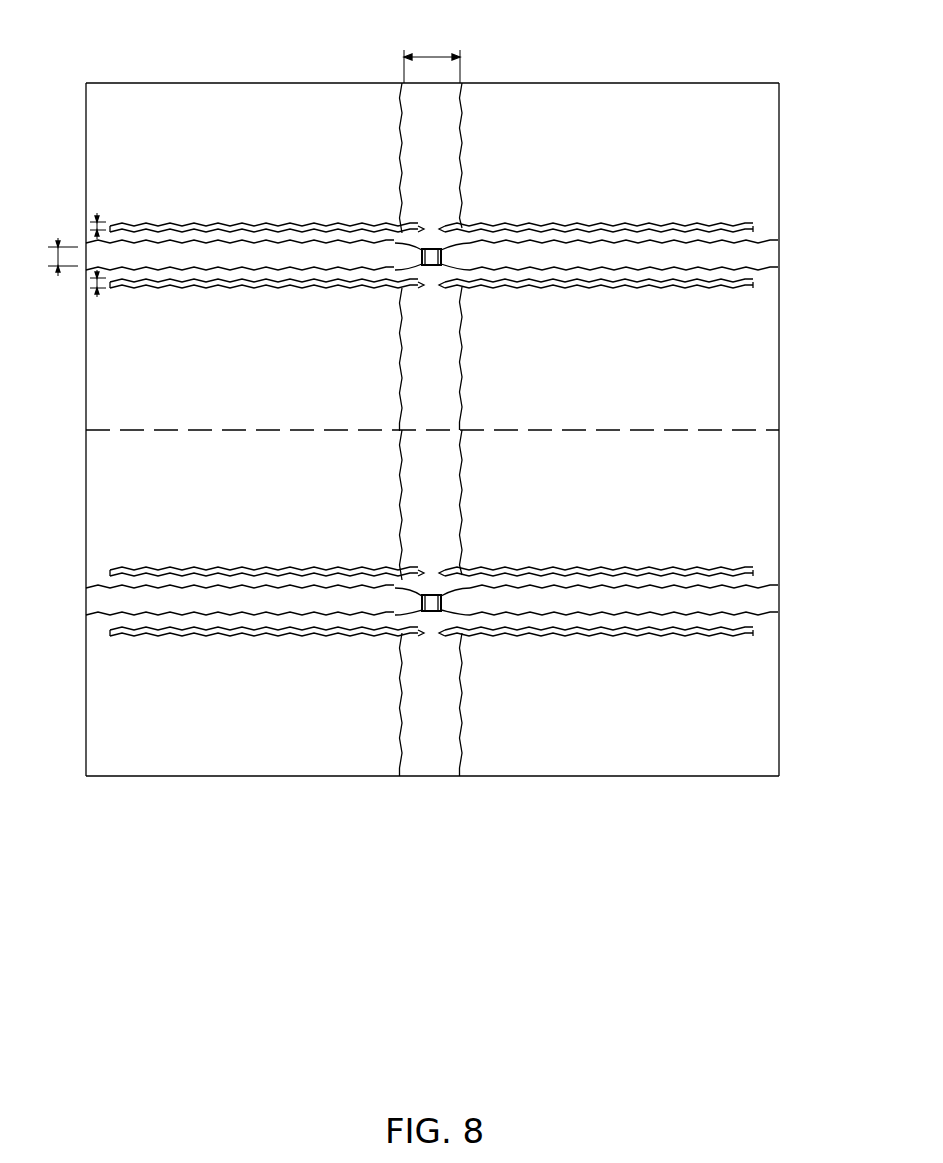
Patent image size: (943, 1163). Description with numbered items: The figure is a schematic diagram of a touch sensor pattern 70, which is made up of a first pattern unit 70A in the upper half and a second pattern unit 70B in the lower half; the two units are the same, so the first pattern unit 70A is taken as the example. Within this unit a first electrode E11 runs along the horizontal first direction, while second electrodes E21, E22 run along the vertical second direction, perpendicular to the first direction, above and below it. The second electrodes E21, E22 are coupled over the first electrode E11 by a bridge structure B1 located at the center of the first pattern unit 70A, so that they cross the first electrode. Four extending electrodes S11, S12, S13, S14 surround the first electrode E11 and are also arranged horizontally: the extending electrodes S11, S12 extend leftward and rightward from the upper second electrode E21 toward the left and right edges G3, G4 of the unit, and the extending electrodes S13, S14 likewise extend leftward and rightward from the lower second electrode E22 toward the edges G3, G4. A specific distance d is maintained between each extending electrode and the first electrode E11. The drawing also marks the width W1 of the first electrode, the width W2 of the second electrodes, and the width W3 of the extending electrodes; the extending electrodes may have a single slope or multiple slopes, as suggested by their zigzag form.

The touch sensor pattern 70 is at (82, 35).
The first pattern unit 70A is at (774, 136).
The second pattern unit 70B is at (138, 472).
The extending electrode S11 is at (292, 226).
The extending electrode S12 is at (650, 226).
The extending electrode S13 is at (182, 289).
The extending electrode S14 is at (683, 289).
The first electrode E11 is at (755, 266).
The second electrode E21 is at (445, 117).
The second electrode E22 is at (440, 385).
The bridge structure B1 is at (431, 251).
The edge G3 is at (86, 350).
The edge G4 is at (779, 205).
The width of the first electrode W1 is at (48, 257).
The width of the second electrodes W2 is at (432, 54).
The width of the extending electrodes W3 is at (97, 225).
The specific distance d is at (88, 281).